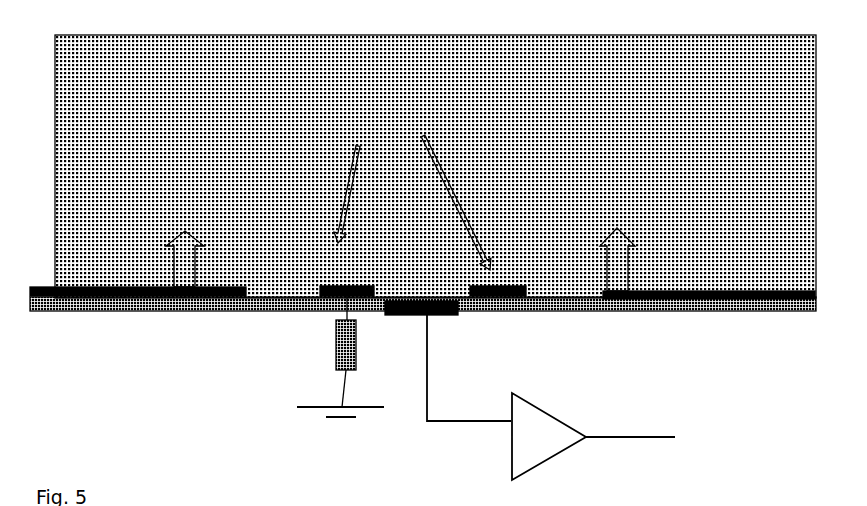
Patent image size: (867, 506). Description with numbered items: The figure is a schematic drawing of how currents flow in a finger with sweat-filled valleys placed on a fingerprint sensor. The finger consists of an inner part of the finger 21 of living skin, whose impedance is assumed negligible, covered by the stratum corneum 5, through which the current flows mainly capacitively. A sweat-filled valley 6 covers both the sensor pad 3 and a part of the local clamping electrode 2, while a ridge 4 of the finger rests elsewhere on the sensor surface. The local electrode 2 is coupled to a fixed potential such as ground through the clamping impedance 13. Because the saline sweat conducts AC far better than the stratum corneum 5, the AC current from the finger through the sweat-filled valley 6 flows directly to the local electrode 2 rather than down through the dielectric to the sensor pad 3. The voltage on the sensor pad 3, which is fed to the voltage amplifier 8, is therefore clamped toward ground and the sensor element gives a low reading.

The inner part of the finger 21 is at (108, 135).
The stratum corneum 5 is at (410, 118).
The local clamping electrode 2 is at (497, 269).
The ridge 4 is at (609, 218).
The sweat-filled valley 6 is at (412, 202).
The clamping impedance 13 is at (340, 351).
The sensor pad 3 is at (448, 361).
The voltage amplifier 8 is at (593, 436).